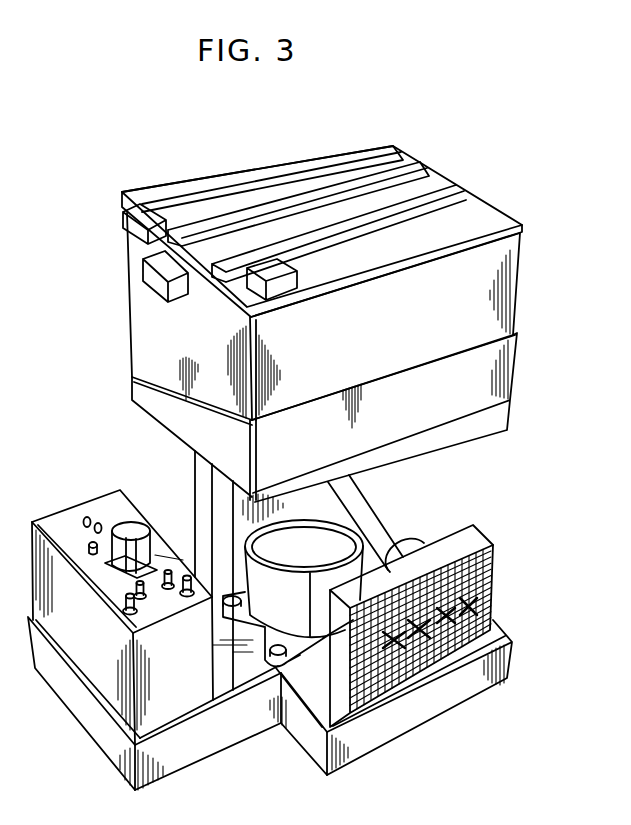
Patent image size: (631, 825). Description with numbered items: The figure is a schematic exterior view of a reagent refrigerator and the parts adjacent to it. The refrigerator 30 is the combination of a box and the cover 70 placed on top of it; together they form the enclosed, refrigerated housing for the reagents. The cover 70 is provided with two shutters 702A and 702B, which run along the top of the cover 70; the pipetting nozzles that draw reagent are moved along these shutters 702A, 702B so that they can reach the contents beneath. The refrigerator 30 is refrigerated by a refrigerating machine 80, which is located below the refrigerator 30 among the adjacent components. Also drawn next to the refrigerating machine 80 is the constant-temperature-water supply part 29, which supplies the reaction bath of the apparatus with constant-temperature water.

The constant-temperature-water supply part 29 is at (62, 517).
The refrigerator 30 is at (568, 293).
The cover 70 is at (495, 218).
The shutter 702A is at (198, 207).
The shutter 702B is at (333, 227).
The refrigerating machine 80 is at (348, 527).